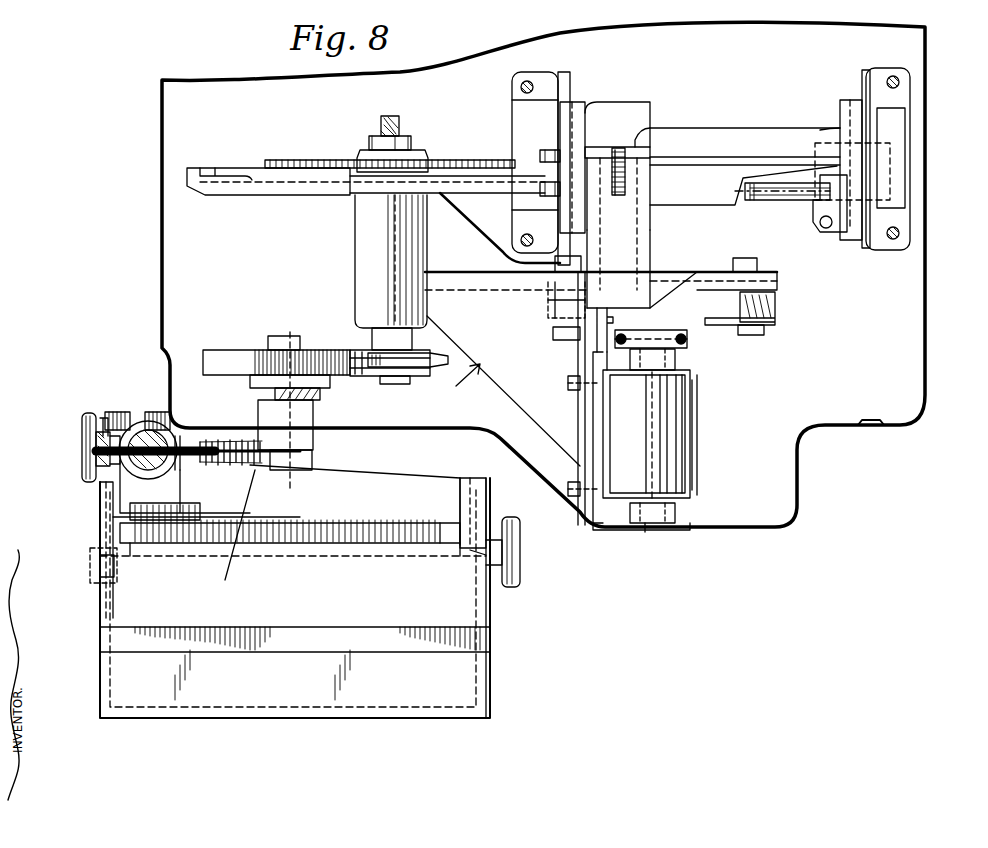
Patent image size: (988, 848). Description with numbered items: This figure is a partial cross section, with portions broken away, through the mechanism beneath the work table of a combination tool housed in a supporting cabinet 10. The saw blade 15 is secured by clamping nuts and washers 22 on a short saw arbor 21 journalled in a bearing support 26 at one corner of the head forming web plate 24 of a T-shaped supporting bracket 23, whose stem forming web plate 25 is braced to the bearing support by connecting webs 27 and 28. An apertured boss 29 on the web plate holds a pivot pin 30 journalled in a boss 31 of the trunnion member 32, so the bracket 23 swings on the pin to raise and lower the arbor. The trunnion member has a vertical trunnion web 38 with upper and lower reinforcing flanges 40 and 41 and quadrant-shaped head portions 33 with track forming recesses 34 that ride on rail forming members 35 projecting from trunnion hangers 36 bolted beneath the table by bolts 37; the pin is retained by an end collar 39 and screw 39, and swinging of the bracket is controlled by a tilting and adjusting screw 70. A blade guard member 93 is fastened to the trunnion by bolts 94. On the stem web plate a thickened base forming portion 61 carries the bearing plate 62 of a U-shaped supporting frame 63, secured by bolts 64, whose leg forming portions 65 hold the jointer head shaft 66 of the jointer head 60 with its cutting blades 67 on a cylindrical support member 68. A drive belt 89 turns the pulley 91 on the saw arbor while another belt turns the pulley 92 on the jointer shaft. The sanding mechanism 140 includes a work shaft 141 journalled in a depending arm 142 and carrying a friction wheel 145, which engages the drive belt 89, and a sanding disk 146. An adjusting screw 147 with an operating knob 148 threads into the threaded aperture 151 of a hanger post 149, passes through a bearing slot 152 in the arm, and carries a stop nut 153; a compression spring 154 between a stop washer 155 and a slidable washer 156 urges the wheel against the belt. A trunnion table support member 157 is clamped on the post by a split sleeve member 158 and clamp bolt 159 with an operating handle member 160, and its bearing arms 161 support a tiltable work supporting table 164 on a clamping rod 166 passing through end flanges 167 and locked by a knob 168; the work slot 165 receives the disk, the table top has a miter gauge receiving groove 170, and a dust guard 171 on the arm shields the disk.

The supporting cabinet 10 is at (162, 218).
The saw blade 15 is at (312, 165).
The saw arbor 21 is at (390, 117).
The clamping nuts and washers 22 is at (410, 150).
The supporting bracket 23 is at (463, 384).
The head forming web plate 24 is at (480, 278).
The stem forming web plate 25 is at (575, 394).
The bearing support 26 is at (355, 237).
The connecting web 27 is at (468, 230).
The connecting web 28 is at (503, 391).
The apertured boss 29 is at (628, 262).
The pivot pin 30 is at (628, 172).
The boss 31 is at (592, 186).
The trunnion member 32 is at (752, 138).
The head portion 33 is at (580, 112).
The track forming recess 34 is at (572, 100).
The rail forming member 35 is at (564, 74).
The trunnion hanger 36 is at (540, 72).
The bolts 37 is at (522, 82).
The trunnion web 38 is at (782, 206).
The end collar 39 is at (632, 150).
The upper reinforcing flange 40 is at (735, 205).
The lower reinforcing flange 41 is at (708, 137).
The jointer head 60 is at (650, 402).
The base forming portion 61 is at (578, 428).
The bearing plate 62 is at (596, 441).
The supporting frame 63 is at (620, 522).
The bolts 64 is at (574, 376).
The leg forming portion 65 is at (676, 366).
The jointer head shaft 66 is at (648, 525).
The cutting blades 67 is at (676, 426).
The cylindrical support member 68 is at (686, 448).
The tilting and adjusting screw 70 is at (794, 195).
The drive belt 89 is at (440, 368).
The pulley 91 is at (377, 378).
The pulley 92 is at (690, 343).
The blade guard member 93 is at (268, 194).
The bolts 94 is at (540, 190).
The sanding mechanism 140 is at (502, 711).
The work shaft 141 is at (292, 556).
The depending arm 142 is at (320, 394).
The friction wheel 145 is at (226, 352).
The sanding disk 146 is at (142, 556).
The adjusting screw 147 is at (178, 440).
The operating knob 148 is at (82, 442).
The hanger post 149 is at (150, 412).
The threaded aperture 151 is at (98, 498).
The bearing slot 152 is at (262, 428).
The stop nut 153 is at (312, 448).
The compression spring 154 is at (242, 464).
The stop washer 155 is at (196, 462).
The slidable washer 156 is at (241, 528).
The trunnion table support member 157 is at (408, 480).
The split sleeve member 158 is at (158, 478).
The clamp bolt 159 is at (118, 412).
The operating handle member 160 is at (100, 420).
The bearing arm 161 is at (108, 585).
The work supporting table 164 is at (470, 672).
The work slot 165 is at (452, 530).
The clamping rod 166 is at (420, 556).
The end flange 167 is at (100, 530).
The knob 168 is at (520, 548).
The miter gauge receiving groove 170 is at (480, 637).
The dust guard 171 is at (198, 545).